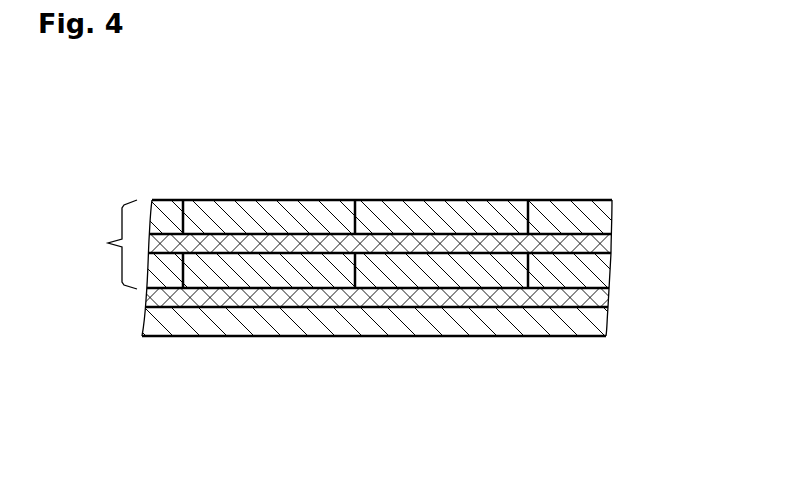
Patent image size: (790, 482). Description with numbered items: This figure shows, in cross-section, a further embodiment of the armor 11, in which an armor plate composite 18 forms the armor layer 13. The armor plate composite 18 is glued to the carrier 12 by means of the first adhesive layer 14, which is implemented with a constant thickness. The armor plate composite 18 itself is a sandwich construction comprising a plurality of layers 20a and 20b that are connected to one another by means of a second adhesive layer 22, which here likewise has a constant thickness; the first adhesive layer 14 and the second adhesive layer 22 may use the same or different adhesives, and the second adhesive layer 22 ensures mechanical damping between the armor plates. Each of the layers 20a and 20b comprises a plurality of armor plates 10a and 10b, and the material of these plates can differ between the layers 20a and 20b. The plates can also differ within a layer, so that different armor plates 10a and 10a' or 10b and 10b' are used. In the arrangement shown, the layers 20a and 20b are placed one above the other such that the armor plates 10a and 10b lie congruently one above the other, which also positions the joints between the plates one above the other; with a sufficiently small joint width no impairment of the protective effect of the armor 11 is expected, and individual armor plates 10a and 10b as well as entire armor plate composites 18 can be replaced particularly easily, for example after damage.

The armor 11 is at (623, 124).
The carrier 12 is at (237, 328).
The first adhesive layer 14 is at (332, 303).
The layer 20a is at (623, 275).
The layer 20b is at (623, 209).
The second adhesive layer 22 is at (623, 242).
The armor plate 10a is at (269, 217).
The armor plate 10a' is at (469, 217).
The armor plate 10b is at (269, 190).
The armor plate 10b' is at (498, 190).
The armor layer 13 is at (92, 244).
The armor plate composite 18 is at (92, 244).